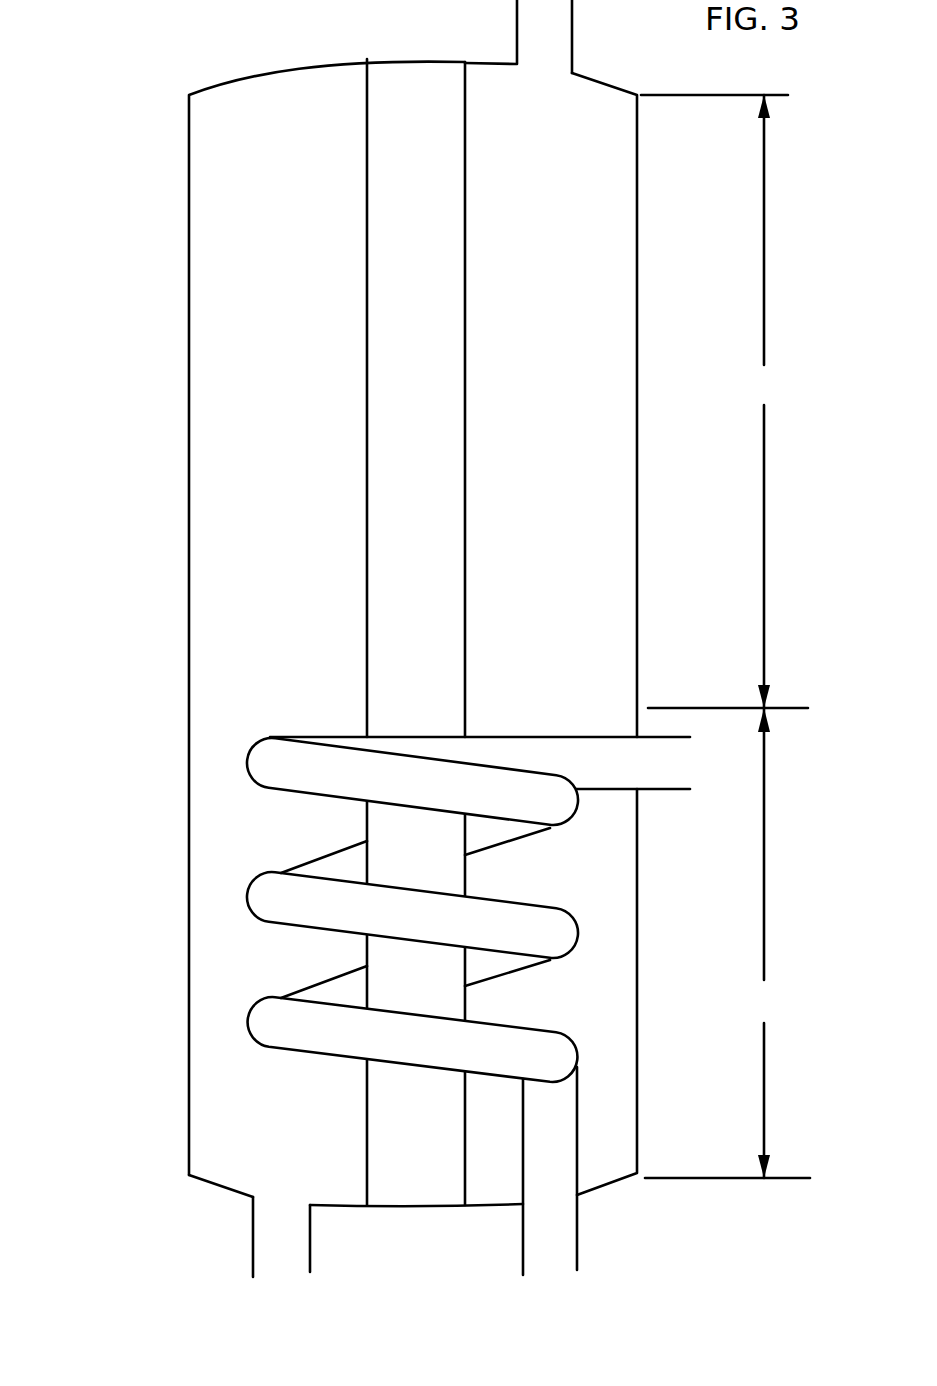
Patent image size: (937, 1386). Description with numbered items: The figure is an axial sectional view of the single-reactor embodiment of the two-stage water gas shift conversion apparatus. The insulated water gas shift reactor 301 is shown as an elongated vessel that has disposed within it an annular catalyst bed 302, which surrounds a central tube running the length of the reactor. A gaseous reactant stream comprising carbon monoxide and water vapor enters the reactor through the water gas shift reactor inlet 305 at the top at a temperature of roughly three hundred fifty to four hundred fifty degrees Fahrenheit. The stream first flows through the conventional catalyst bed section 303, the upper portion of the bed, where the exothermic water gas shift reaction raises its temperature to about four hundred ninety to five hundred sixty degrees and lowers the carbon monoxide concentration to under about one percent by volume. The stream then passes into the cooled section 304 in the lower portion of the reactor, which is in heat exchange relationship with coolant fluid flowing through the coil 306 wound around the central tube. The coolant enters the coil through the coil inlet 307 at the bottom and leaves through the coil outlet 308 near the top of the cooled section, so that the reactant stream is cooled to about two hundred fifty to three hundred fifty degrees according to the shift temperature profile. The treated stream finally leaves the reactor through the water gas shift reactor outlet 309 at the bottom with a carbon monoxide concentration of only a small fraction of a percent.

The insulated water gas shift reactor 301 is at (172, 90).
The annular catalyst bed 302 is at (197, 344).
The conventional catalyst bed section 303 is at (724, 401).
The cooled section 304 is at (727, 943).
The water gas shift reactor inlet 305 is at (533, 12).
The coil 306 is at (578, 935).
The coil inlet 307 is at (557, 1257).
The coil outlet 308 is at (680, 763).
The water gas shift reactor outlet 309 is at (287, 1263).